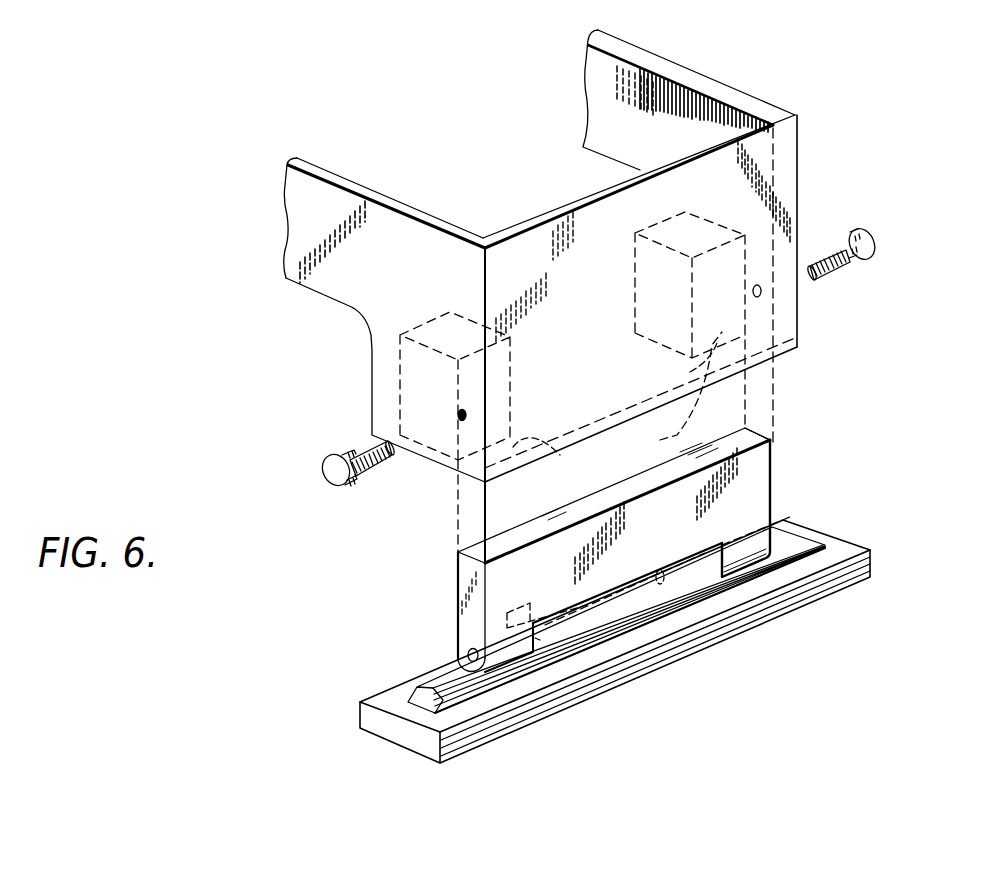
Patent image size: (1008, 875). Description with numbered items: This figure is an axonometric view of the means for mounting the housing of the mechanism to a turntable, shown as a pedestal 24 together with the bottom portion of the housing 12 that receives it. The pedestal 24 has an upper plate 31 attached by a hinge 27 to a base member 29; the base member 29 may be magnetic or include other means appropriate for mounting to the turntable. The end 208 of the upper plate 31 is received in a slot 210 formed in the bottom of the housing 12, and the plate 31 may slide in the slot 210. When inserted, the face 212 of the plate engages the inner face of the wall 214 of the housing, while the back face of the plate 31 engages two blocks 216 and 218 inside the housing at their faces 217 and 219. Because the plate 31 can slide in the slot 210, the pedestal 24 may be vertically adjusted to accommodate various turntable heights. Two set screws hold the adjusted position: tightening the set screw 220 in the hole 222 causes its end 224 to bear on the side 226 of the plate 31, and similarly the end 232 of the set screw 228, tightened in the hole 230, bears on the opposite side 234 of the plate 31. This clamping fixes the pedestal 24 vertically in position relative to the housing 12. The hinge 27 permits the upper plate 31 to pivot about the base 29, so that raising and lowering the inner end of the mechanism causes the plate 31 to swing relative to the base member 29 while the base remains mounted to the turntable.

The housing 12 is at (584, 200).
The pedestal 24 is at (618, 537).
The hinge 27 is at (615, 627).
The base member 29 is at (648, 608).
The upper plate 31 is at (503, 595).
The end 208 is at (583, 503).
The slot 210 is at (690, 430).
The face 212 is at (777, 447).
The wall 214 is at (605, 418).
The block 216 is at (400, 352).
The face 217 is at (505, 410).
The block 218 is at (637, 262).
The face 219 is at (690, 372).
The set screw 220 is at (334, 471).
The hole 222 is at (458, 420).
The end 224 is at (393, 452).
The side 226 is at (463, 590).
The set screw 228 is at (843, 259).
The hole 230 is at (762, 297).
The end 232 is at (810, 278).
The side 234 is at (767, 470).